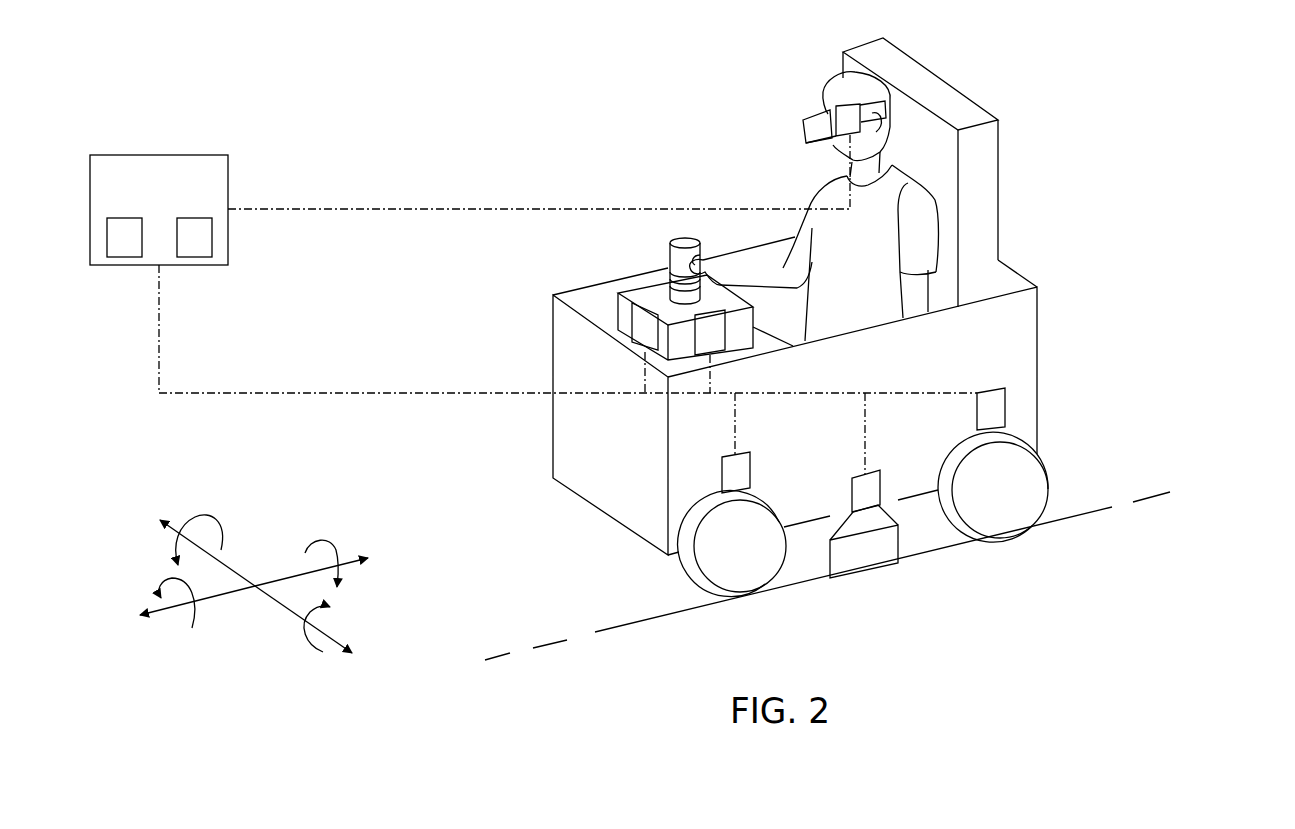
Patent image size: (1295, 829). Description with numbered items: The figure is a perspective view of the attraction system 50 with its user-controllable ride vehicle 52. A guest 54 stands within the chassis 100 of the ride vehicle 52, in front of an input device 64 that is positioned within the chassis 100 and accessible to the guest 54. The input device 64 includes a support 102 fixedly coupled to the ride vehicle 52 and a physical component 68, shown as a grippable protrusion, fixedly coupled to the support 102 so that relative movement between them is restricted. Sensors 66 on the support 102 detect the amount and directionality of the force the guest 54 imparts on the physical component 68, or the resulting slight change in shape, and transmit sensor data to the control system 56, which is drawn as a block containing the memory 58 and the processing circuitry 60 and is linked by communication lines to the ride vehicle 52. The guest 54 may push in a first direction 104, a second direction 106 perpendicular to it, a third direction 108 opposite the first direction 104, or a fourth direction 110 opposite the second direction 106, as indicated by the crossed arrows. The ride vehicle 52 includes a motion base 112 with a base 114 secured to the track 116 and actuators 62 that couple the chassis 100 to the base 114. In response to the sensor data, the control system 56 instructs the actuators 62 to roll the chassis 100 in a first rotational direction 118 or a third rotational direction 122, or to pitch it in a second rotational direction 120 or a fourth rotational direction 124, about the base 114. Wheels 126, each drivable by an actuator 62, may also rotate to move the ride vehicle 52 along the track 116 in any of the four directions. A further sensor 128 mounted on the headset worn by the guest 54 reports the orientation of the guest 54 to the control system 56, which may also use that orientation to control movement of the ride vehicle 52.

The attraction system 50 is at (993, 54).
The ride vehicle 52 is at (1147, 352).
The guest 54 is at (814, 206).
The control system 56 is at (160, 155).
The memory 58 is at (122, 258).
The processing circuitry 60 is at (193, 258).
The actuator 62 is at (752, 472).
The input device 64 is at (632, 277).
The sensor 66 is at (618, 313).
The physical component 68 is at (680, 242).
The chassis 100 is at (1022, 312).
The support 102 is at (723, 293).
The first direction 104 is at (237, 569).
The second direction 106 is at (227, 596).
The third direction 108 is at (285, 612).
The fourth direction 110 is at (278, 580).
The motion base 112 is at (972, 630).
The base 114 is at (853, 572).
The track 116 is at (1085, 517).
The first rotational direction 118 is at (185, 632).
The second rotational direction 120 is at (221, 518).
The third rotational direction 122 is at (328, 542).
The fourth rotational direction 124 is at (323, 655).
The wheel 126 is at (878, 152).
The sensor 128 is at (803, 127).